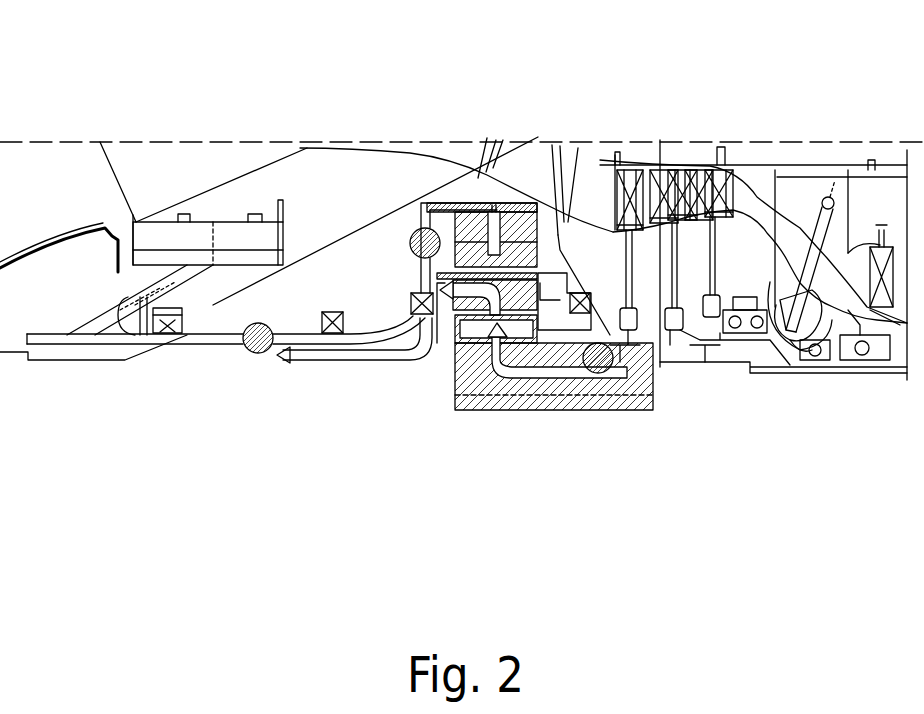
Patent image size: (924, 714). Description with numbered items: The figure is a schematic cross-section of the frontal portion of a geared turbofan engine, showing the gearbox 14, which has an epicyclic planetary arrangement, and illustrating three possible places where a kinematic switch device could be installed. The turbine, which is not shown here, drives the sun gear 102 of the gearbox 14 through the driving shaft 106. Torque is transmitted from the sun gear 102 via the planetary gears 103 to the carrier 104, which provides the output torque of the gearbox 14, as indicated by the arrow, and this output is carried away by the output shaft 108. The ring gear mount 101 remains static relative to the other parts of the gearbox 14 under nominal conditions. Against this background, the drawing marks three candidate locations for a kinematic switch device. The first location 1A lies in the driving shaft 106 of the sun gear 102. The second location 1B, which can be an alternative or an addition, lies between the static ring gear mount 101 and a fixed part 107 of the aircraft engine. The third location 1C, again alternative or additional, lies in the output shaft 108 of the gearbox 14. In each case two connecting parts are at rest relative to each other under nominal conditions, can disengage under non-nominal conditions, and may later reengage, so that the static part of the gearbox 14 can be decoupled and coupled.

The ring gear mount 101 is at (497, 203).
The gearbox 14 is at (553, 143).
The second location 1B is at (410, 228).
The fixed part 107 is at (413, 293).
The output shaft 108 is at (207, 345).
The third location 1C is at (258, 353).
The carrier 104 is at (432, 352).
The planetary gears 103 is at (450, 340).
The sun gear 102 is at (457, 345).
The first location 1A is at (600, 380).
The driving shaft 106 is at (653, 407).